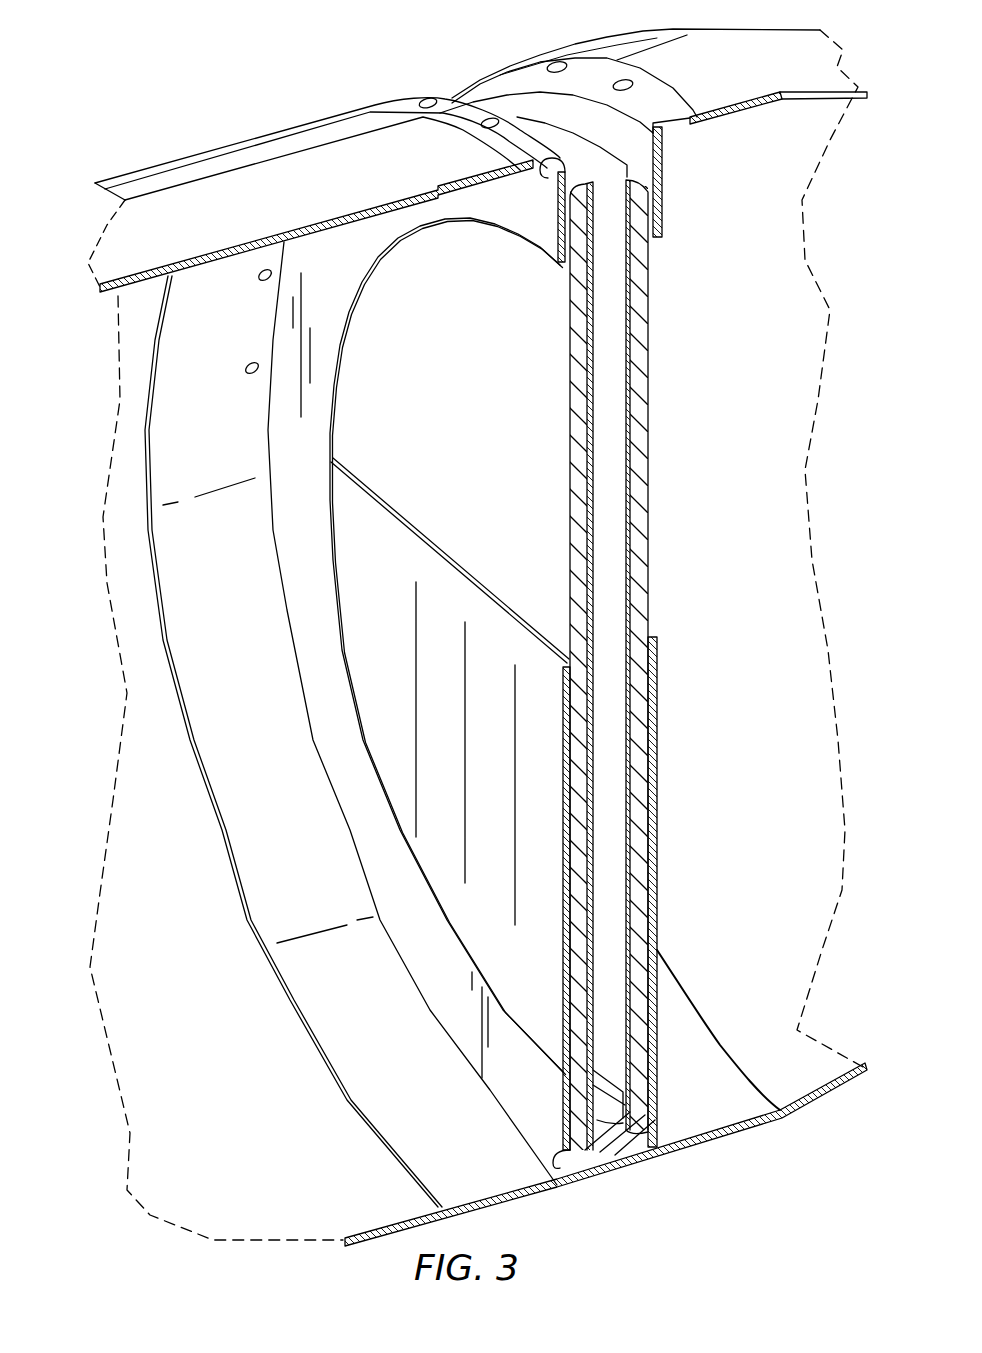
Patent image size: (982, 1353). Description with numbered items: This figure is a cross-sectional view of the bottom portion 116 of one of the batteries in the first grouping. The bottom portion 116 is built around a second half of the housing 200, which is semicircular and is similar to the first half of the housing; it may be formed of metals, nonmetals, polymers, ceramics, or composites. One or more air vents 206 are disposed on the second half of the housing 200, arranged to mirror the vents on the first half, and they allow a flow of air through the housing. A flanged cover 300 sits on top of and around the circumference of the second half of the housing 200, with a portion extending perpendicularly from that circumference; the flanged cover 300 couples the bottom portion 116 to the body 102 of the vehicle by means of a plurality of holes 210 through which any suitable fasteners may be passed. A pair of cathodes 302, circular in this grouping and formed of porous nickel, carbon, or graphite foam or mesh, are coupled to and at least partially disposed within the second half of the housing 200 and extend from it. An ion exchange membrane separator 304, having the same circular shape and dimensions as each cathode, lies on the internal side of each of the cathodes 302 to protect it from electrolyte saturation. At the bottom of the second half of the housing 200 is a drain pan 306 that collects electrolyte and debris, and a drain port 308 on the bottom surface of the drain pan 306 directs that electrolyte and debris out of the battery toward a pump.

The body 102 is at (245, 160).
The bottom portion 116 is at (705, 453).
The second half of the housing 200 is at (365, 577).
The air vents 206 is at (417, 683).
The holes 210 is at (423, 98).
The flanged cover 300 is at (190, 342).
The cathodes 302 is at (640, 323).
The ion exchange membrane separator 304 is at (648, 279).
The drain pan 306 is at (695, 1140).
The drain port 308 is at (603, 1142).